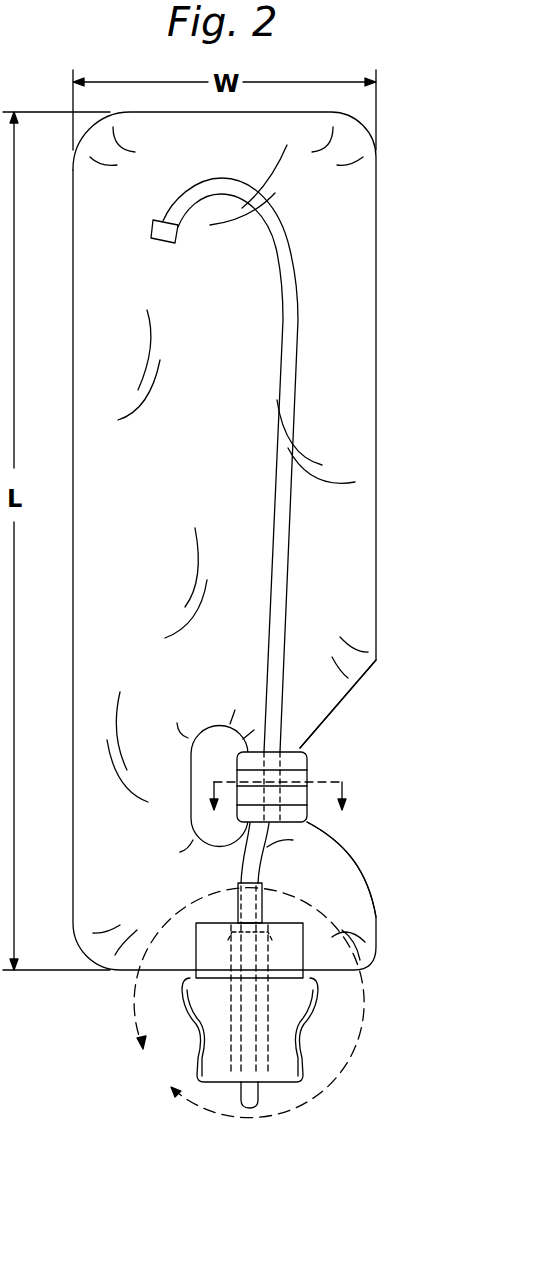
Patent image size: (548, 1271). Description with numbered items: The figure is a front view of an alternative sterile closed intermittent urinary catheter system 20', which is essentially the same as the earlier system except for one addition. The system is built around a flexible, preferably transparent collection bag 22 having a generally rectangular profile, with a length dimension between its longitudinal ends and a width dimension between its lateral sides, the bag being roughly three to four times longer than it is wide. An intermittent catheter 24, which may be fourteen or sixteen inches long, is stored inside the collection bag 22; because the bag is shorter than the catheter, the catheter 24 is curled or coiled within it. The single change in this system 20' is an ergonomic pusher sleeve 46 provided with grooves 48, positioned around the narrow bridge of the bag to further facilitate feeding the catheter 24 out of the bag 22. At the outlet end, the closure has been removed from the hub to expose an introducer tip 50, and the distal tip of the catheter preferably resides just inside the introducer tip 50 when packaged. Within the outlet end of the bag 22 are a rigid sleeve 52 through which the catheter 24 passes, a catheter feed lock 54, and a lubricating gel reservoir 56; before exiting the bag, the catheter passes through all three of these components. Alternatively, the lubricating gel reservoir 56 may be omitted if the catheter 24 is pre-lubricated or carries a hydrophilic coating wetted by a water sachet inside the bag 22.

The sterile closed intermittent urinary catheter system 20' is at (238, 645).
The collection bag 22 is at (377, 510).
The intermittent catheter 24 is at (300, 382).
The ergonomic pusher sleeve 46 is at (308, 822).
The grooves 48 is at (293, 752).
The introducer tip 50 is at (241, 1098).
The rigid sleeve 52 is at (238, 893).
The catheter feed lock 54 is at (267, 948).
The lubricating gel reservoir 56 is at (308, 1037).